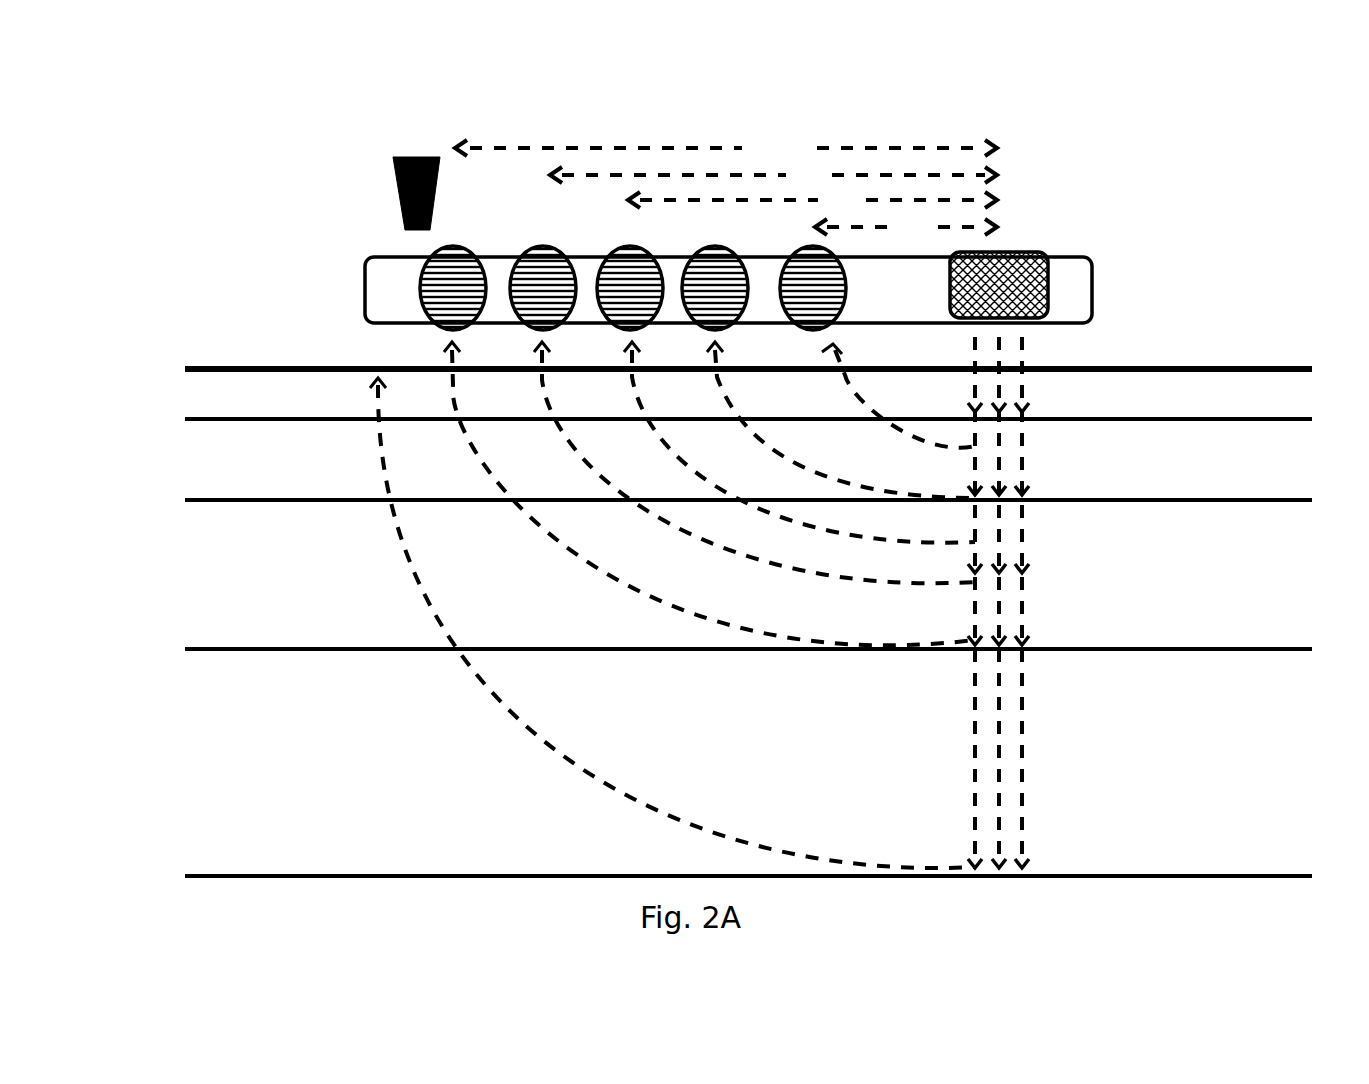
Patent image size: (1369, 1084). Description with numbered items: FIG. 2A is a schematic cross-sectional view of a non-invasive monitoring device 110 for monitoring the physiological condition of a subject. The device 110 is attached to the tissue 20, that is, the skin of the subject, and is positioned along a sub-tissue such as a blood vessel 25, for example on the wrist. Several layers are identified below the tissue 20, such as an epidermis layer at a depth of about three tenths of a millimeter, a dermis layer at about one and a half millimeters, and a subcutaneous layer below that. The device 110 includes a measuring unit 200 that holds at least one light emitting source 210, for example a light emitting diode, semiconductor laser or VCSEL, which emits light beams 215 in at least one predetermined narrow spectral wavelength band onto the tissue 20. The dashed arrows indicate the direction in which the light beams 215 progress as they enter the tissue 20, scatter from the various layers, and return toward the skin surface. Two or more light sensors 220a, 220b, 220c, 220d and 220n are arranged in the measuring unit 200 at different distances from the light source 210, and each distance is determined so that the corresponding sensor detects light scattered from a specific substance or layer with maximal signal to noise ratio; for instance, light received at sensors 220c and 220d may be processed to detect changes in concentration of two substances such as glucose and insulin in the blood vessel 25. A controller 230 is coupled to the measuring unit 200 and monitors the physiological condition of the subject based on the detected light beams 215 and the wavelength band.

The tissue 20 is at (315, 362).
The blood vessel 25 is at (1275, 585).
The non-invasive monitoring device 110 is at (777, 197).
The measuring unit 200 is at (1067, 253).
The light emitting source 210 is at (1050, 288).
The light beams 215 is at (712, 620).
The light sensor 220a is at (813, 245).
The light sensor 220b is at (712, 245).
The light sensor 220c is at (636, 273).
The light sensor 220d is at (546, 273).
The light sensor 220n is at (453, 245).
The controller 230 is at (406, 155).